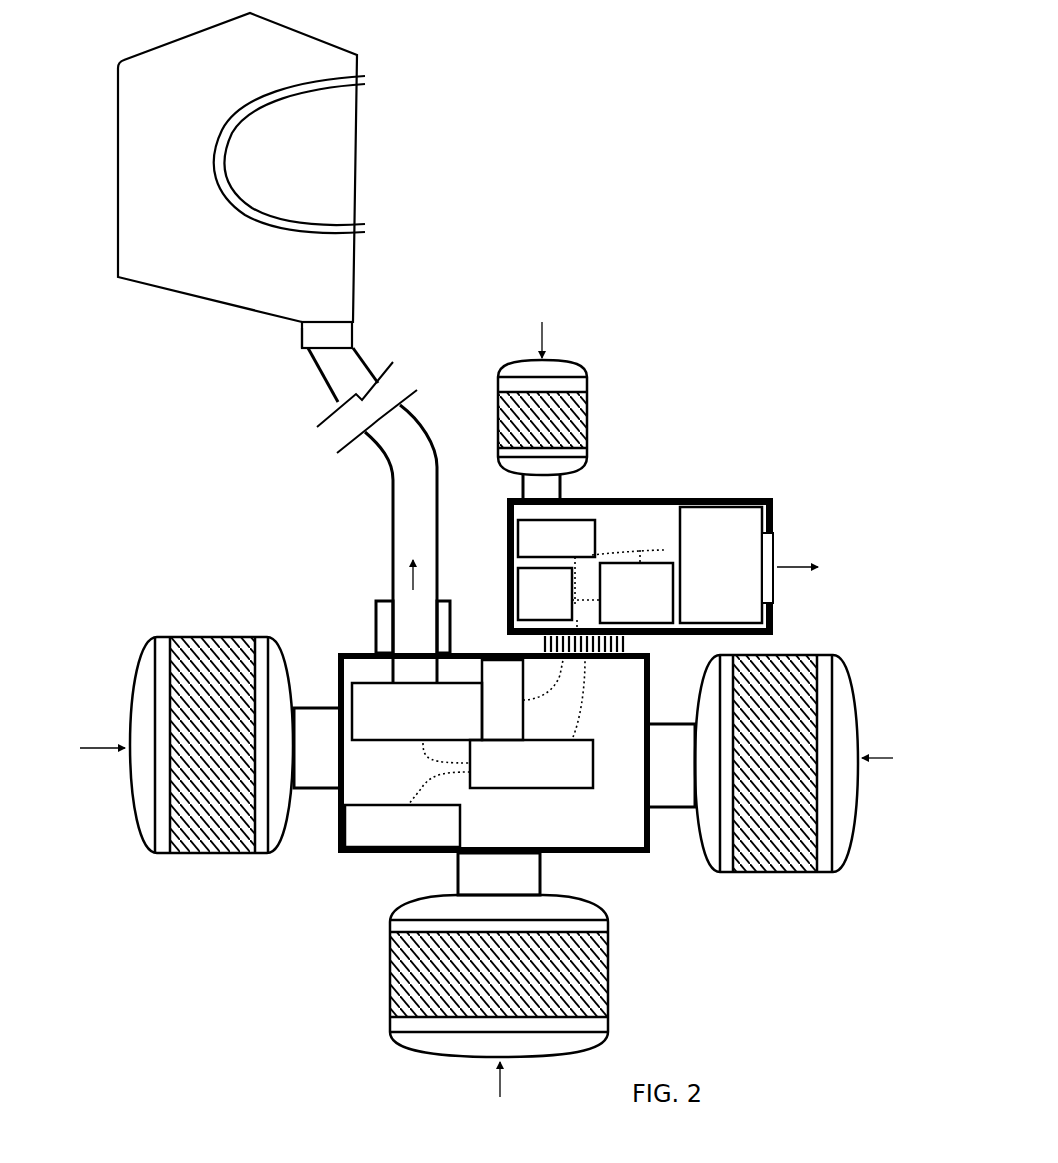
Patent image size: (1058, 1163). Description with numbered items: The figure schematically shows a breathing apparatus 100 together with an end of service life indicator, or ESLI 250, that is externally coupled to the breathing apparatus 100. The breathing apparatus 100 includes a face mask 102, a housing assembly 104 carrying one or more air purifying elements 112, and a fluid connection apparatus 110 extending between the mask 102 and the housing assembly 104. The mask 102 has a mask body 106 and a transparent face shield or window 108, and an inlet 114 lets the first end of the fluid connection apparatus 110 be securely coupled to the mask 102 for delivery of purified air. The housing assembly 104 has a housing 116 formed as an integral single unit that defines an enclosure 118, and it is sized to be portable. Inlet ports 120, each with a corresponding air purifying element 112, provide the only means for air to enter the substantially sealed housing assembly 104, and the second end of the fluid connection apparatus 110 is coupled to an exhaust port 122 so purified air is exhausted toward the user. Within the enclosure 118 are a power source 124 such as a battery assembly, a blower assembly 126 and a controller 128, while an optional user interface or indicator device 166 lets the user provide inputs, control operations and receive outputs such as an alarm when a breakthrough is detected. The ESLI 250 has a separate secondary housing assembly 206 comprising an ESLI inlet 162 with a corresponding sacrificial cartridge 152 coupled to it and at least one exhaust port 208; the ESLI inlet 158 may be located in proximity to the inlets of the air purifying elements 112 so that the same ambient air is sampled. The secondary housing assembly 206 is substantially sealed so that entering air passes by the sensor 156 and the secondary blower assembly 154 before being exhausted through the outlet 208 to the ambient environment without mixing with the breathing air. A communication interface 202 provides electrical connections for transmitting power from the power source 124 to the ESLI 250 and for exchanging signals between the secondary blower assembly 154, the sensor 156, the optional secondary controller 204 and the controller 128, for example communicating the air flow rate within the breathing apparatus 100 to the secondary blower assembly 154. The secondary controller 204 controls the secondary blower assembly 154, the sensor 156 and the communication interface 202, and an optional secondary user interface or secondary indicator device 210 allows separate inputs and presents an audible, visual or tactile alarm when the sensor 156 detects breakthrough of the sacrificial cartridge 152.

The breathing apparatus 100 is at (125, 471).
The face mask 102 is at (404, 59).
The housing assembly 104 is at (328, 586).
The mask body 106 is at (190, 270).
The transparent face shield or window 108 is at (343, 133).
The fluid connection apparatus 110 is at (353, 345).
The air purifying elements 112 is at (203, 853).
The inlet 114 is at (305, 340).
The housing 116 is at (338, 653).
The enclosure 118 is at (597, 825).
The inlet ports 120 is at (310, 788).
The exhaust port 122 is at (378, 600).
The power source 124 is at (500, 652).
The blower assembly 126 is at (390, 742).
The controller 128 is at (530, 792).
The sacrificial cartridge 152 is at (588, 407).
The secondary blower assembly 154 is at (738, 601).
The sensor 156 is at (600, 530).
The ESLI inlet 158 is at (557, 352).
The ESLI inlet 162 is at (562, 485).
The user interface or indicator device 166 is at (350, 876).
The communication interface 202 is at (630, 648).
The secondary controller 204 is at (507, 602).
The secondary housing assembly 206 is at (507, 537).
The exhaust port 208 is at (774, 547).
The secondary user interface or secondary indicator device 210 is at (640, 563).
The ESLI 250 is at (800, 467).